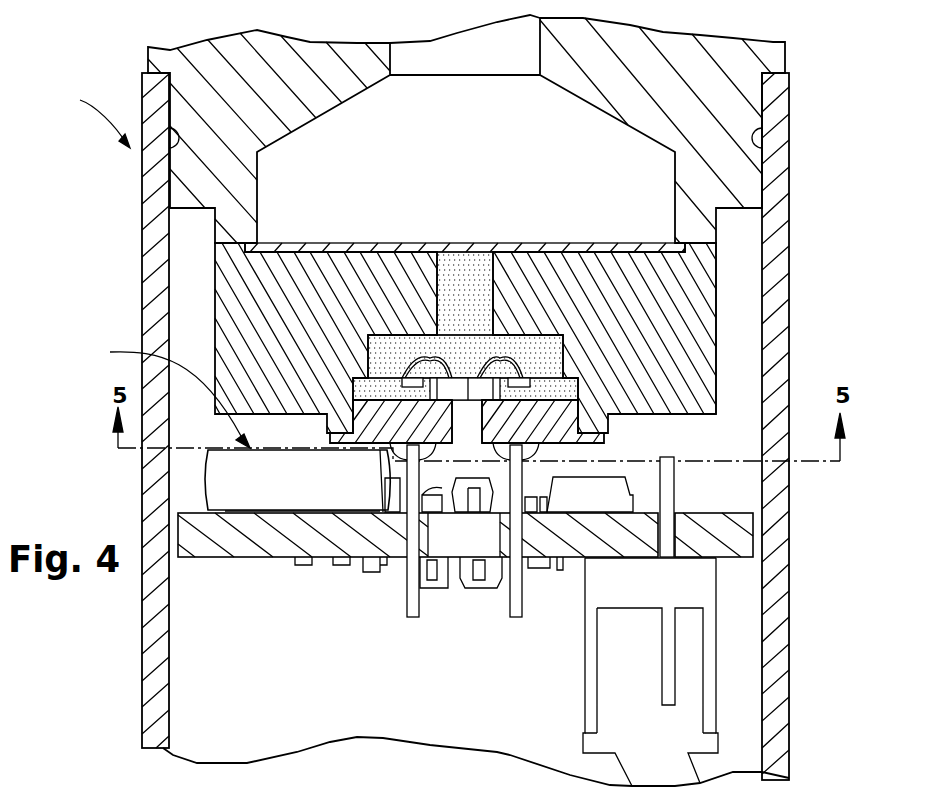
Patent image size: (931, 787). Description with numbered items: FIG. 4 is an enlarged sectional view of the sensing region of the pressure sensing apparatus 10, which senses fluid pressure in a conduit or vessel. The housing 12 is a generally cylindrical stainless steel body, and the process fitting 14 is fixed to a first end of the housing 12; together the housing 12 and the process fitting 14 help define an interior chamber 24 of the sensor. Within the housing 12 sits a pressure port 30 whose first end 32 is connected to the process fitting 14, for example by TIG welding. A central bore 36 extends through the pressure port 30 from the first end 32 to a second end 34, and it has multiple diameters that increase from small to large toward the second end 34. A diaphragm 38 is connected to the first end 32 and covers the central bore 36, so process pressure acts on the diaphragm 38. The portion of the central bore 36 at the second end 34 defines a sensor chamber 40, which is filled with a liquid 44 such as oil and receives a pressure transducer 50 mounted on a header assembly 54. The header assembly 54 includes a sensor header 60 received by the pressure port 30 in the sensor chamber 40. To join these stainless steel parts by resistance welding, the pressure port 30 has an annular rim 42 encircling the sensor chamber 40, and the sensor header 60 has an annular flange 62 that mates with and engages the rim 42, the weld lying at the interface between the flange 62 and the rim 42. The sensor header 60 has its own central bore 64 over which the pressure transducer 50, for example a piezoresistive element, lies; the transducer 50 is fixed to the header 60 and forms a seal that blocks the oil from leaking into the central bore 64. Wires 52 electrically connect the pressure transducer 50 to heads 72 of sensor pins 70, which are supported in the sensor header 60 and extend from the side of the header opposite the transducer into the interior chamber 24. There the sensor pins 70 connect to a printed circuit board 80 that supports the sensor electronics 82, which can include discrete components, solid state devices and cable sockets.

The pressure sensing apparatus 10 is at (92, 110).
The housing 12 is at (157, 255).
The process fitting 14 is at (230, 88).
The interior chamber 24 is at (205, 697).
The pressure port 30 is at (687, 328).
The first end 32 is at (705, 248).
The second end 34 is at (665, 405).
The central bore 36 is at (488, 365).
The diaphragm 38 is at (305, 250).
The sensor chamber 40 is at (550, 353).
The annular rim 42 is at (343, 420).
The liquid 44 is at (430, 345).
The pressure transducer 50 is at (470, 385).
The wires 52 is at (428, 352).
The header assembly 54 is at (534, 455).
The sensor header 60 is at (407, 418).
The annular flange 62 is at (338, 430).
The central bore 64 is at (463, 430).
The sensor pins 70 is at (412, 587).
The heads 72 is at (407, 380).
The printed circuit board 80 is at (718, 538).
The sensor electronics 82 is at (165, 388).